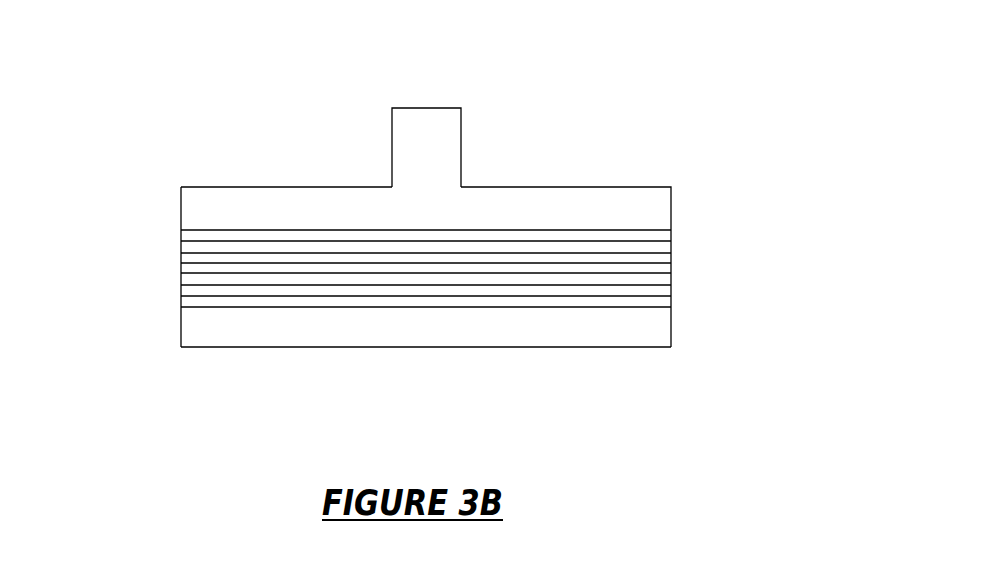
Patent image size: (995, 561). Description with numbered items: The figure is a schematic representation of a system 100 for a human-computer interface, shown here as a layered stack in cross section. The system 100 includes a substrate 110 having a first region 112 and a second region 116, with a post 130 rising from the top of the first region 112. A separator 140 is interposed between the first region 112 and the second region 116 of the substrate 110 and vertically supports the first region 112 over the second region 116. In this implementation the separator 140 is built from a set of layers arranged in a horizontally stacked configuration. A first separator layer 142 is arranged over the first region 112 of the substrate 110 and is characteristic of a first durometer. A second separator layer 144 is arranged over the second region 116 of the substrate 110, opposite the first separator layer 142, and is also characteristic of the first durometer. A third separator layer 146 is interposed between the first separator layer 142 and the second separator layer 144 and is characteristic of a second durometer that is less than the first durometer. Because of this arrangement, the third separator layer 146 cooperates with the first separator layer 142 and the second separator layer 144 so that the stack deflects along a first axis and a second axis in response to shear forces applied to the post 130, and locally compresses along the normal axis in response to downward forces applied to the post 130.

The system 100 is at (133, 112).
The post 130 is at (417, 165).
The first region 112 is at (233, 233).
The substrate 110 is at (185, 237).
The first separator layer 142 is at (660, 247).
The separator 140 is at (372, 270).
The third separator layer 146 is at (663, 270).
The second separator layer 144 is at (660, 290).
The second region 116 is at (227, 302).